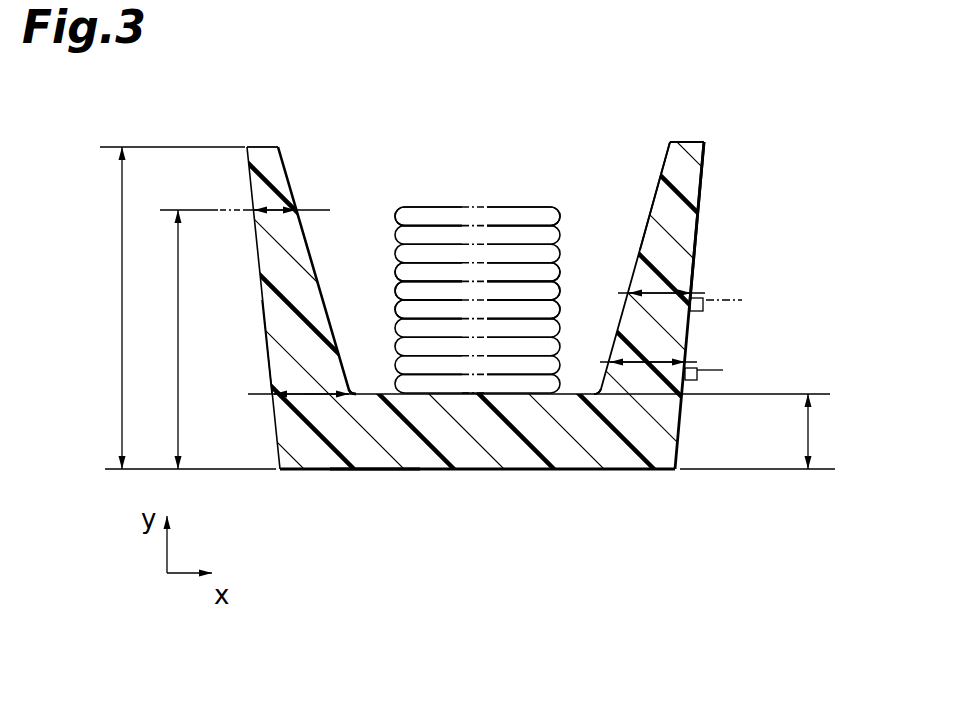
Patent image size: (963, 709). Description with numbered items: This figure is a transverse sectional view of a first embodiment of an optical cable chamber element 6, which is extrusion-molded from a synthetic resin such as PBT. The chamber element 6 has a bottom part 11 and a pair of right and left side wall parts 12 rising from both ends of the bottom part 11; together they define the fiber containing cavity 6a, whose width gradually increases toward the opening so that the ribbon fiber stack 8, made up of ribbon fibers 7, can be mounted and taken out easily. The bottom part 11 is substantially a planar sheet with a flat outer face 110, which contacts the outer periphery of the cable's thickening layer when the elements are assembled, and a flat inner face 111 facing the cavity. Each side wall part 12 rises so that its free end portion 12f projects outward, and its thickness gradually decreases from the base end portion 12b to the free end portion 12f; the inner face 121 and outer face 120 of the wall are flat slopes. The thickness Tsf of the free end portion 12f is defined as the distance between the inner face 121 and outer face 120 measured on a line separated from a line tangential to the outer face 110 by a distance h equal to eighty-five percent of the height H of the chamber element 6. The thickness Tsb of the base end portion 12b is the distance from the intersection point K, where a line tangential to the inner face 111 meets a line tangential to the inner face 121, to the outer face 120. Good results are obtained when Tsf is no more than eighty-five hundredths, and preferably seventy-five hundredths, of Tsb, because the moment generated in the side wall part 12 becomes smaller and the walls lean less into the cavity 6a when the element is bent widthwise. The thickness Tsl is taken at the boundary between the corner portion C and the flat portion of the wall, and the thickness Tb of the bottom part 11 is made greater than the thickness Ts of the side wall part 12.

The chamber element 6 is at (743, 148).
The fiber containing cavity 6a is at (472, 188).
The ribbon fibers 7 is at (400, 213).
The ribbon fiber stack 8 is at (567, 295).
The bottom part 11 is at (514, 462).
The side wall part 12 is at (268, 272).
The base end portion 12b is at (285, 382).
The free end portion 12f is at (697, 142).
The outer face 110 is at (373, 472).
The inner face 111 is at (590, 393).
The outer face 120 is at (700, 195).
The inner face 121 is at (657, 195).
The intersection point K is at (350, 392).
The corner portion C is at (595, 390).
The height of the chamber element H is at (188, 308).
The distance h is at (245, 339).
The thickness of the free end portion Tsf is at (295, 205).
The thickness of the base end portion Tsb is at (308, 398).
The thickness of the side wall part Ts is at (668, 292).
The thickness at the boundary point Tsl is at (663, 358).
The thickness of the bottom part Tb is at (757, 431).